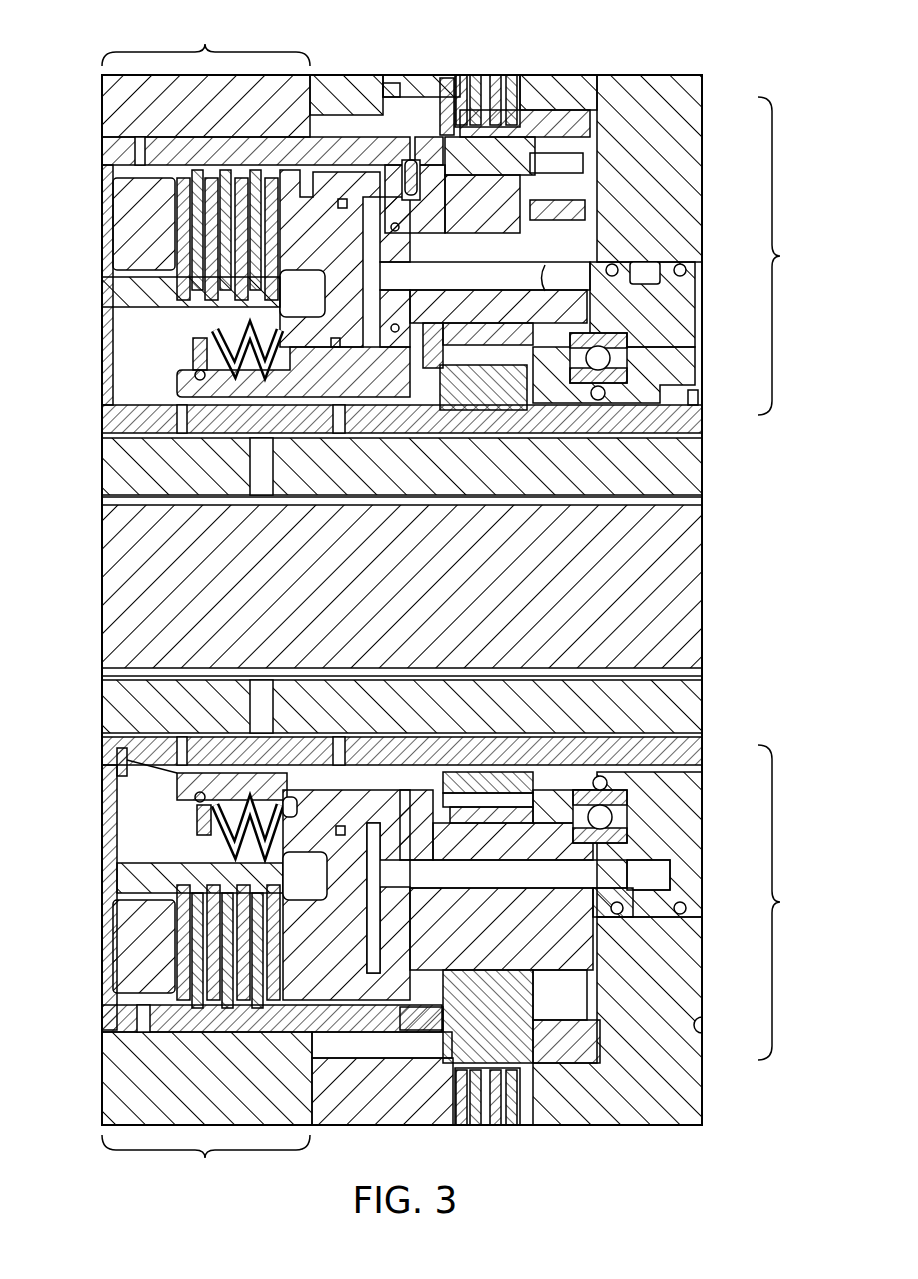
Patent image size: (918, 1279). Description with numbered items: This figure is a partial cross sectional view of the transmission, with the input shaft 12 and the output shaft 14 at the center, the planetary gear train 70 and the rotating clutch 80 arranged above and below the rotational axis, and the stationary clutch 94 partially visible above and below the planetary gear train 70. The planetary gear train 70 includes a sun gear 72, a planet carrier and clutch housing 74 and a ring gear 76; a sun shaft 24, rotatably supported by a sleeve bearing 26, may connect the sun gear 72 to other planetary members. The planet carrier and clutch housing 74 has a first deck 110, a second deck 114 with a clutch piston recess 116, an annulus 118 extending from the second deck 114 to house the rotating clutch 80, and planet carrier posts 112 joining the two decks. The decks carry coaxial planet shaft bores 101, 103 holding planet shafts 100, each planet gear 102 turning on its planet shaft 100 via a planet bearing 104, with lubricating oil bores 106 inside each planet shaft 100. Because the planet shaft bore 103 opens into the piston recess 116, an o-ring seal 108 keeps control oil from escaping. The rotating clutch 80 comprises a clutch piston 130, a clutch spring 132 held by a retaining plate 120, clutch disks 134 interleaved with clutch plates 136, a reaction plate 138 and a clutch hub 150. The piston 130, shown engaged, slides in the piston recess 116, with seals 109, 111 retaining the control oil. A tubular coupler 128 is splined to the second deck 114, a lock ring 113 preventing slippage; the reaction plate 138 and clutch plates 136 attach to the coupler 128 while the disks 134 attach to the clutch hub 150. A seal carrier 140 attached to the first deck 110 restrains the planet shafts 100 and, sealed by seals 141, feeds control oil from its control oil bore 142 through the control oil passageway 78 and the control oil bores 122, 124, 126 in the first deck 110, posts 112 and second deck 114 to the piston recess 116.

The input shaft 12 is at (690, 602).
The output shaft 14 is at (690, 466).
The sun shaft 24 is at (698, 410).
The sleeve bearing 26 is at (498, 500).
The planetary gear train 70 is at (782, 578).
The sun gear 72 is at (555, 382).
The planet carrier and clutch housing 74 is at (600, 935).
The ring gear 76 is at (530, 145).
The control oil passageway 78 is at (512, 865).
The rotating clutch 80 is at (207, 603).
The stationary clutch 94 is at (492, 75).
The planet shaft 100 is at (522, 196).
The planet shaft bore 101 is at (560, 300).
The planet gear 102 is at (620, 172).
The planet shaft bore 103 is at (440, 292).
The planet bearing 104 is at (540, 185).
The lubricating oil bores 106 is at (540, 270).
The o-ring seal 108 is at (393, 224).
The seal 109 is at (340, 210).
The first deck 110 is at (562, 800).
The seal 111 is at (340, 347).
The planet carrier posts 112 is at (485, 835).
The lock ring 113 is at (420, 165).
The second deck 114 is at (385, 810).
The clutch piston recess 116 is at (373, 830).
The annulus 118 is at (180, 777).
The retaining plate 120 is at (200, 815).
The control oil bore 122 is at (552, 895).
The control oil bore 124 is at (485, 905).
The control oil bore 126 is at (425, 905).
The tubular coupler 128 is at (165, 1015).
The clutch piston 130 is at (320, 950).
The clutch spring 132 is at (280, 837).
The clutch disks 134 is at (185, 255).
The clutch plates 136 is at (195, 200).
The reaction plate 138 is at (135, 945).
The seal carrier 140 is at (690, 876).
The seals 141 is at (622, 913).
The control oil bore 142 is at (660, 870).
The clutch hub 150 is at (125, 295).